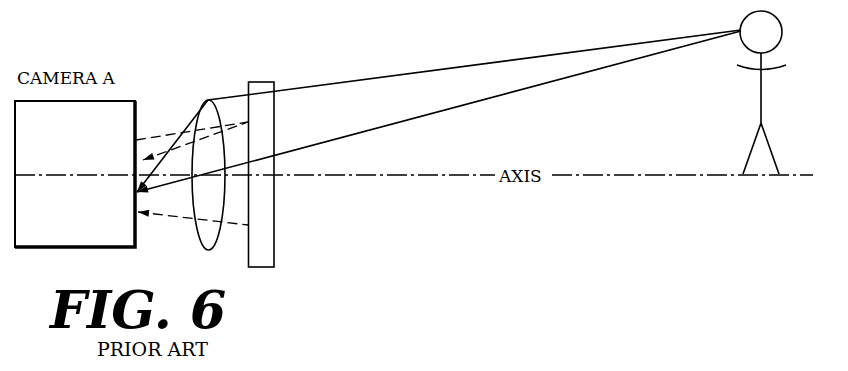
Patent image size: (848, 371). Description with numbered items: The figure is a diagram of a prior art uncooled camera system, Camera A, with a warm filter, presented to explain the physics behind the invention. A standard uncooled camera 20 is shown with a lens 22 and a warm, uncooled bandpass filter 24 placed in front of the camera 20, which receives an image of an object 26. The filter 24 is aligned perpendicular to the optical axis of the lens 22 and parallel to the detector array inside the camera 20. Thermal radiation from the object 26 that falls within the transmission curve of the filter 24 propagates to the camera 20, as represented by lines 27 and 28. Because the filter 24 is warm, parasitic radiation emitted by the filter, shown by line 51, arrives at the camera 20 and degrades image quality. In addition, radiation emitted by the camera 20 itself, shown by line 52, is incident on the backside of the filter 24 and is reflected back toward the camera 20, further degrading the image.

The uncooled camera 20 is at (87, 149).
The lens 22 is at (207, 99).
The bandpass filter 24 is at (274, 236).
The object 26 is at (762, 96).
The line 27 is at (536, 55).
The line 28 is at (536, 88).
The line 51 is at (178, 254).
The line 52 is at (178, 120).